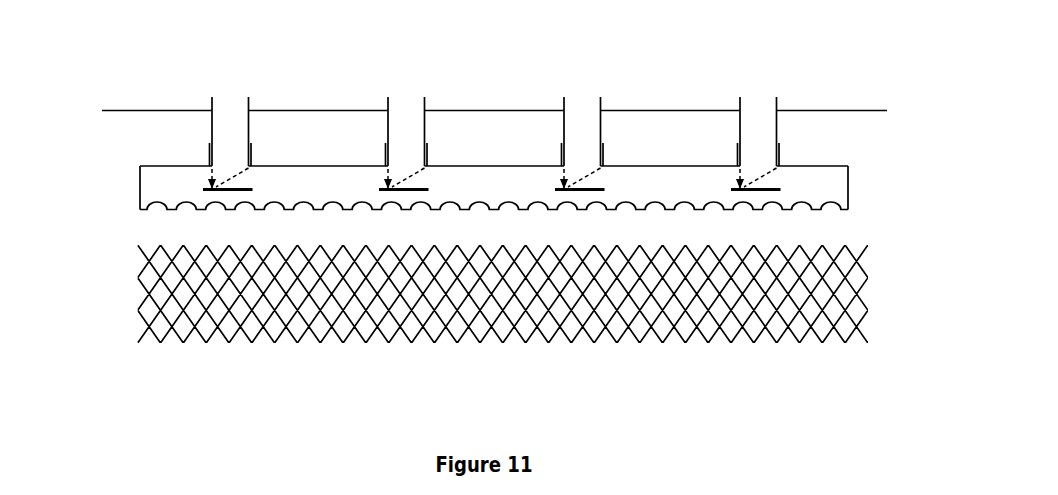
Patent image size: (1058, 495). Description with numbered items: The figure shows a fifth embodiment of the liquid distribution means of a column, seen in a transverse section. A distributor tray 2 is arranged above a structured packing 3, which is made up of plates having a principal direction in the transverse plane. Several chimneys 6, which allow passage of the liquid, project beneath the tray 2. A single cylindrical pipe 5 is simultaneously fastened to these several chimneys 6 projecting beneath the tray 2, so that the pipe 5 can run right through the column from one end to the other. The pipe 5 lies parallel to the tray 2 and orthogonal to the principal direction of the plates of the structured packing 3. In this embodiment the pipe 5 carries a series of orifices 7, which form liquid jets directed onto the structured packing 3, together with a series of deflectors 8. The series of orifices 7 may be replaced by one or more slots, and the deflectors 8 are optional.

The distributor tray 2 is at (163, 114).
The structured packing 3 is at (138, 278).
The cylindrical pipe 5 is at (853, 169).
The chimneys 6 is at (253, 97).
The orifices 7 is at (838, 211).
The deflectors 8 is at (218, 188).